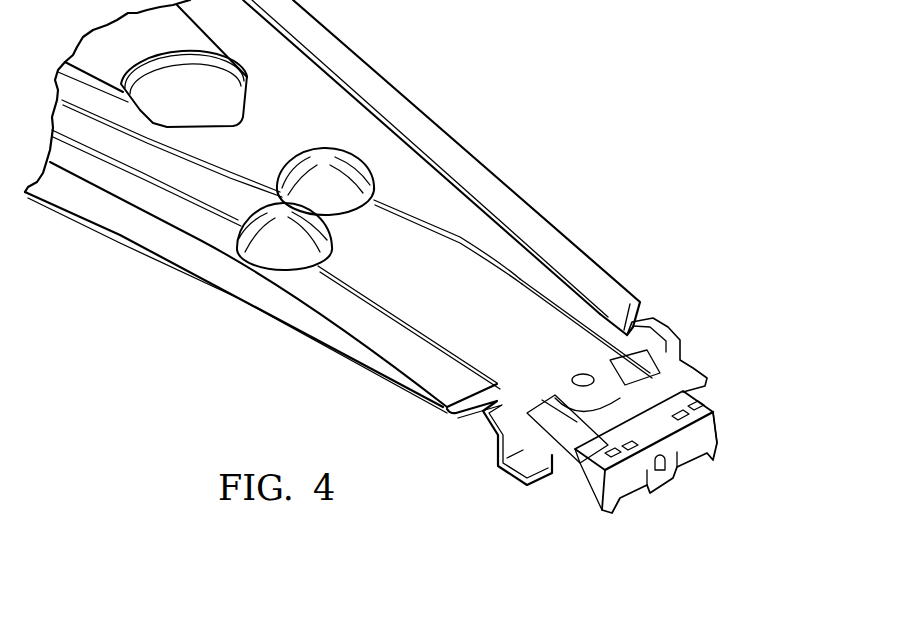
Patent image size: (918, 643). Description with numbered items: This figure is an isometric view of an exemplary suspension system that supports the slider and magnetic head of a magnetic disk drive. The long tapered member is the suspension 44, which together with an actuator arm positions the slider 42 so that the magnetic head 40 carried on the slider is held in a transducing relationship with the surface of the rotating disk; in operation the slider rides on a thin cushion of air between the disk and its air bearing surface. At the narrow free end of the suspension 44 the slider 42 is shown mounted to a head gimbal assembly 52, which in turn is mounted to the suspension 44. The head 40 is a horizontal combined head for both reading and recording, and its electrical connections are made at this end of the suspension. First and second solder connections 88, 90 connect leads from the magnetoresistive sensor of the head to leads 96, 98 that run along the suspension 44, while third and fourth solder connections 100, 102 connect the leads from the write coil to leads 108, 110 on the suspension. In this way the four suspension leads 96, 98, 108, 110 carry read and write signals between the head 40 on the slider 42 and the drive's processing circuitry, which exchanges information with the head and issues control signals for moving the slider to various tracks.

The magnetic head 40 is at (665, 471).
The slider 42 is at (560, 482).
The suspension 44 is at (483, 161).
The head gimbal assembly 52 is at (620, 417).
The first solder connection 88 is at (590, 458).
The second solder connection 90 is at (697, 397).
The lead 96 is at (358, 297).
The lead 98 is at (537, 287).
The third solder connection 100 is at (638, 450).
The fourth solder connection 102 is at (715, 416).
The lead 108 is at (382, 297).
The lead 110 is at (460, 238).